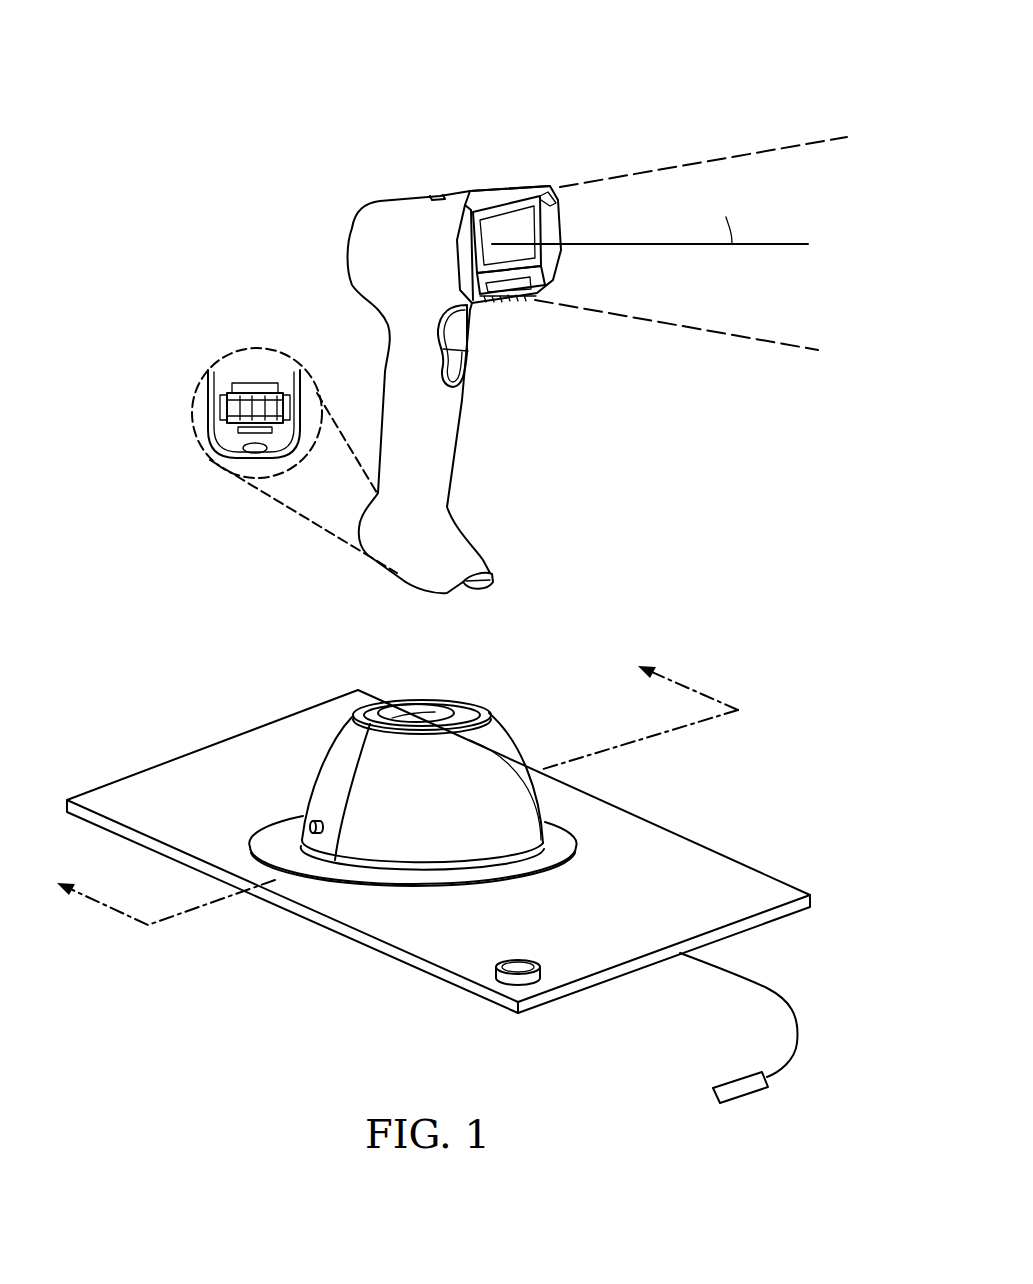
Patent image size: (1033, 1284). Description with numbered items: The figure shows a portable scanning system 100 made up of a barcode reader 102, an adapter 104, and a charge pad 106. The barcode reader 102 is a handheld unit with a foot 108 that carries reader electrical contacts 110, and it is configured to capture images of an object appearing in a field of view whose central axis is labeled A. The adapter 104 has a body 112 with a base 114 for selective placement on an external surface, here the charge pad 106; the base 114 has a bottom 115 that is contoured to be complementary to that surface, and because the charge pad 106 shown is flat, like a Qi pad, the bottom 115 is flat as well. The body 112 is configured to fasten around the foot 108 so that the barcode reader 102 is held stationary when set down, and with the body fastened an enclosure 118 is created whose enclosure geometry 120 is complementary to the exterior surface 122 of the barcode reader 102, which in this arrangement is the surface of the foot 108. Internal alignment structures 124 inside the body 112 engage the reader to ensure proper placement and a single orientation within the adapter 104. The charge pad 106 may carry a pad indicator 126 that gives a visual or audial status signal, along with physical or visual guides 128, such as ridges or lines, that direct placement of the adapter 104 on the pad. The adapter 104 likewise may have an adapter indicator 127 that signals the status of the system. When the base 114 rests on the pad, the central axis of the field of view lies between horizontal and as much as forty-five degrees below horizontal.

The portable scanning system 100 is at (198, 52).
The barcode reader 102 is at (440, 440).
The adapter 104 is at (478, 702).
The charge pad 106 is at (440, 960).
The foot 108 is at (488, 570).
The reader electrical contacts 110 is at (260, 403).
The body 112 is at (513, 778).
The base 114 is at (500, 855).
The bottom 115 is at (390, 884).
The enclosure 118 is at (418, 702).
The enclosure geometry 120 is at (445, 712).
The exterior surface 122 is at (440, 490).
The internal alignment structures 124 is at (398, 712).
The pad indicator 126 is at (508, 968).
The adapter indicator 127 is at (300, 820).
The guides 128 is at (262, 842).